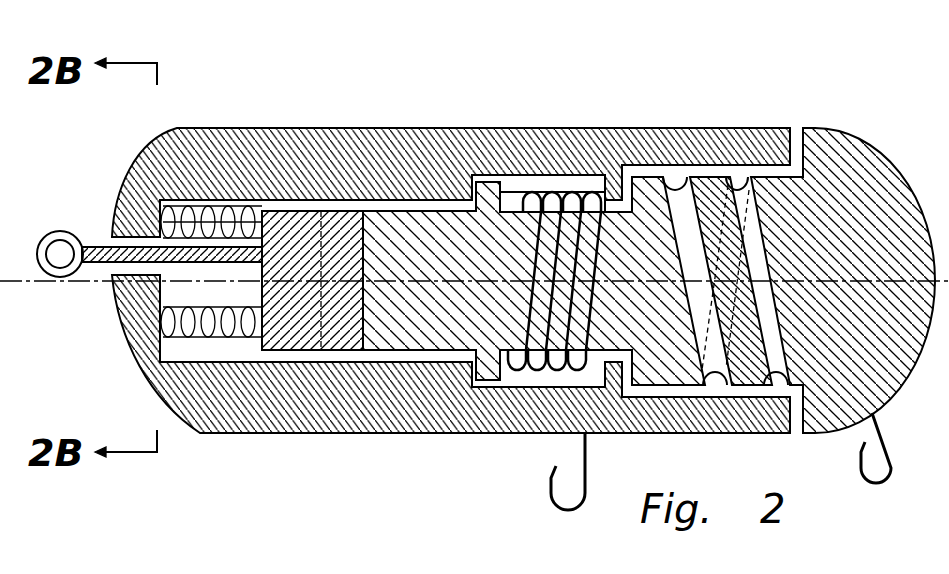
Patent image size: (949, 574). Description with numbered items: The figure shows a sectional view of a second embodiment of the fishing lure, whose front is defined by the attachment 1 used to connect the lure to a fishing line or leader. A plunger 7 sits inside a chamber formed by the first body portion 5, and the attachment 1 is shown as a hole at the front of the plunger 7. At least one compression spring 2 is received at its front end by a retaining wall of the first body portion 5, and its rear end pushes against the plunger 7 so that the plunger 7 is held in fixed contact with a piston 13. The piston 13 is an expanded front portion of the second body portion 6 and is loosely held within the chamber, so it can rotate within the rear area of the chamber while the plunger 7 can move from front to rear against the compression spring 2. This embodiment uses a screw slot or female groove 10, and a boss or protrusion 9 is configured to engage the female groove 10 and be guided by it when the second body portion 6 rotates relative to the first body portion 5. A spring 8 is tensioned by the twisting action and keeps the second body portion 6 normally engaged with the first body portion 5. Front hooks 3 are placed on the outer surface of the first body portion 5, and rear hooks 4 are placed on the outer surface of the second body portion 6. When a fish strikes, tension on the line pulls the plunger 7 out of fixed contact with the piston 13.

The attachment 1 is at (68, 231).
The compression spring 2 is at (188, 333).
The front hooks 3 is at (548, 490).
The rear hooks 4 is at (893, 445).
The first body portion 5 is at (500, 128).
The second body portion 6 is at (877, 178).
The plunger 7 is at (292, 213).
The spring 8 is at (567, 192).
The boss or protrusion 9 is at (737, 183).
The screw slot or female groove 10 is at (760, 353).
The piston 13 is at (408, 212).